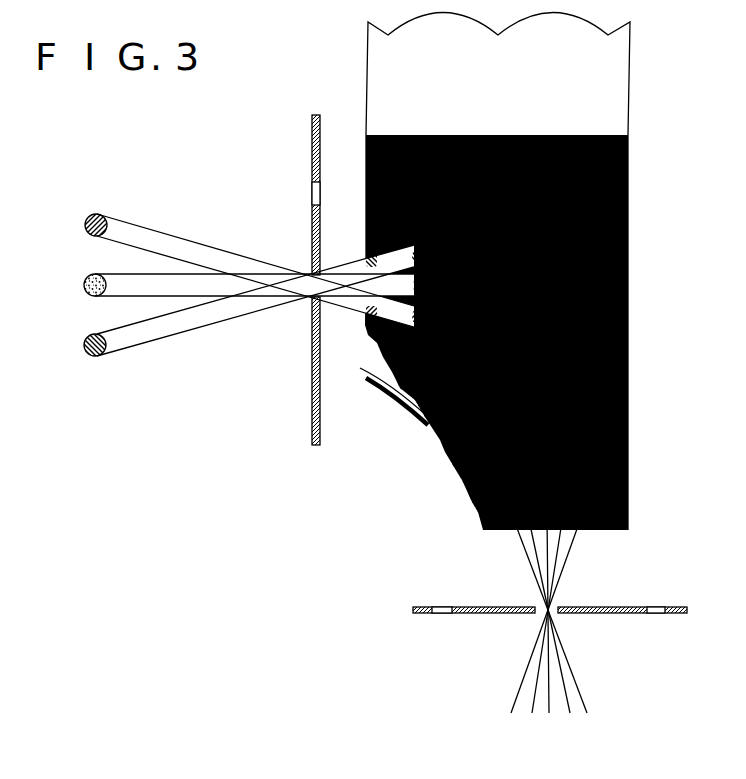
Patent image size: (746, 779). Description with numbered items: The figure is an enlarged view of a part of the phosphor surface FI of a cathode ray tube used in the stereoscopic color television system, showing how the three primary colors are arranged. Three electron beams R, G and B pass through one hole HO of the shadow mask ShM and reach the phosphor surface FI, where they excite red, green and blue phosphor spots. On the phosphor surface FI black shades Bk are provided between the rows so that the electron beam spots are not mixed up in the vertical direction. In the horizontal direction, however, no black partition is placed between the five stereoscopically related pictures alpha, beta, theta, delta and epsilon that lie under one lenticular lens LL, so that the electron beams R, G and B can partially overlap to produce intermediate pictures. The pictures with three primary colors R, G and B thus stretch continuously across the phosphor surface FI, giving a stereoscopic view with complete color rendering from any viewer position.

The lenticular lens LL is at (378, 58).
The shadow mask ShM is at (313, 150).
The hole of shadow mask HO is at (306, 288).
The blue electron beam and blue spots B is at (86, 225).
The green electron beam and green spots G is at (86, 285).
The red electron beam and red spots R is at (86, 345).
The black shades Bk is at (385, 385).
The phosphor surface FI is at (626, 352).